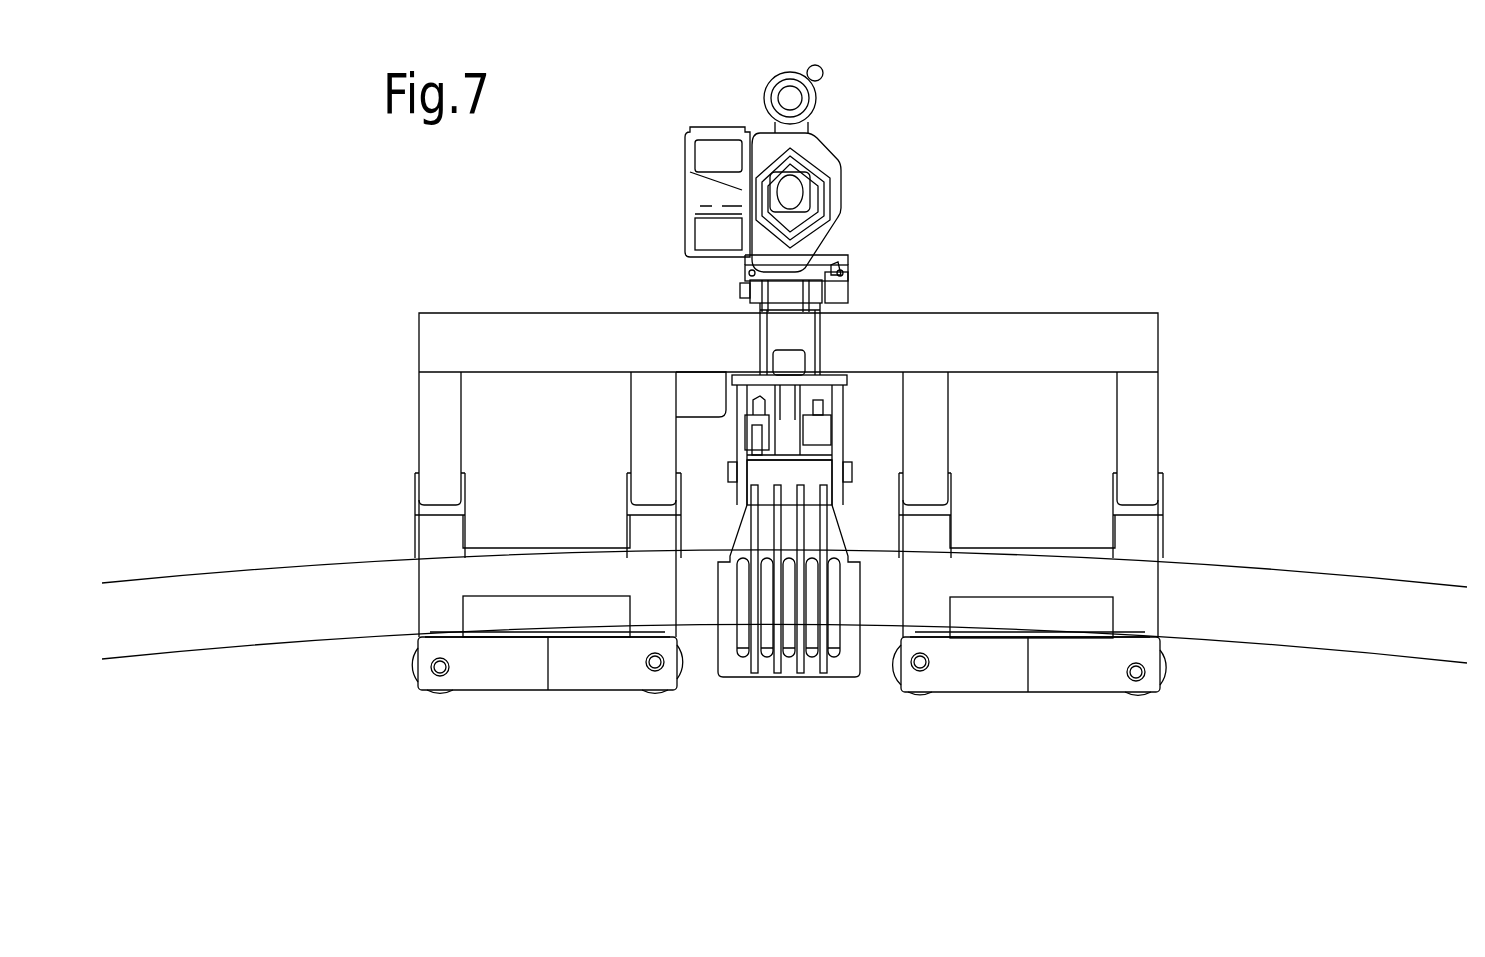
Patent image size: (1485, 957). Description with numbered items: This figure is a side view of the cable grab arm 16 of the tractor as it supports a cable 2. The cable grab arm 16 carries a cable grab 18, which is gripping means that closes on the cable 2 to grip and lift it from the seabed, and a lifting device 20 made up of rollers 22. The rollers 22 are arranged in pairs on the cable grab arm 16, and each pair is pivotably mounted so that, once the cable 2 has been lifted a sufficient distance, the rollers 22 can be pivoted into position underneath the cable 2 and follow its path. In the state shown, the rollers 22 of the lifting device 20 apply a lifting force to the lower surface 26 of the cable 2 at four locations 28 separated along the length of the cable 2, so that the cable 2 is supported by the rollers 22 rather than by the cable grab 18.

The cable 2 is at (1282, 618).
The cable grab arm 16 is at (846, 193).
The cable grab 18 is at (809, 675).
The lifting device 20 is at (1115, 340).
The rollers 22 is at (426, 700).
The lower surface 26 is at (258, 660).
The locations 28 is at (649, 634).